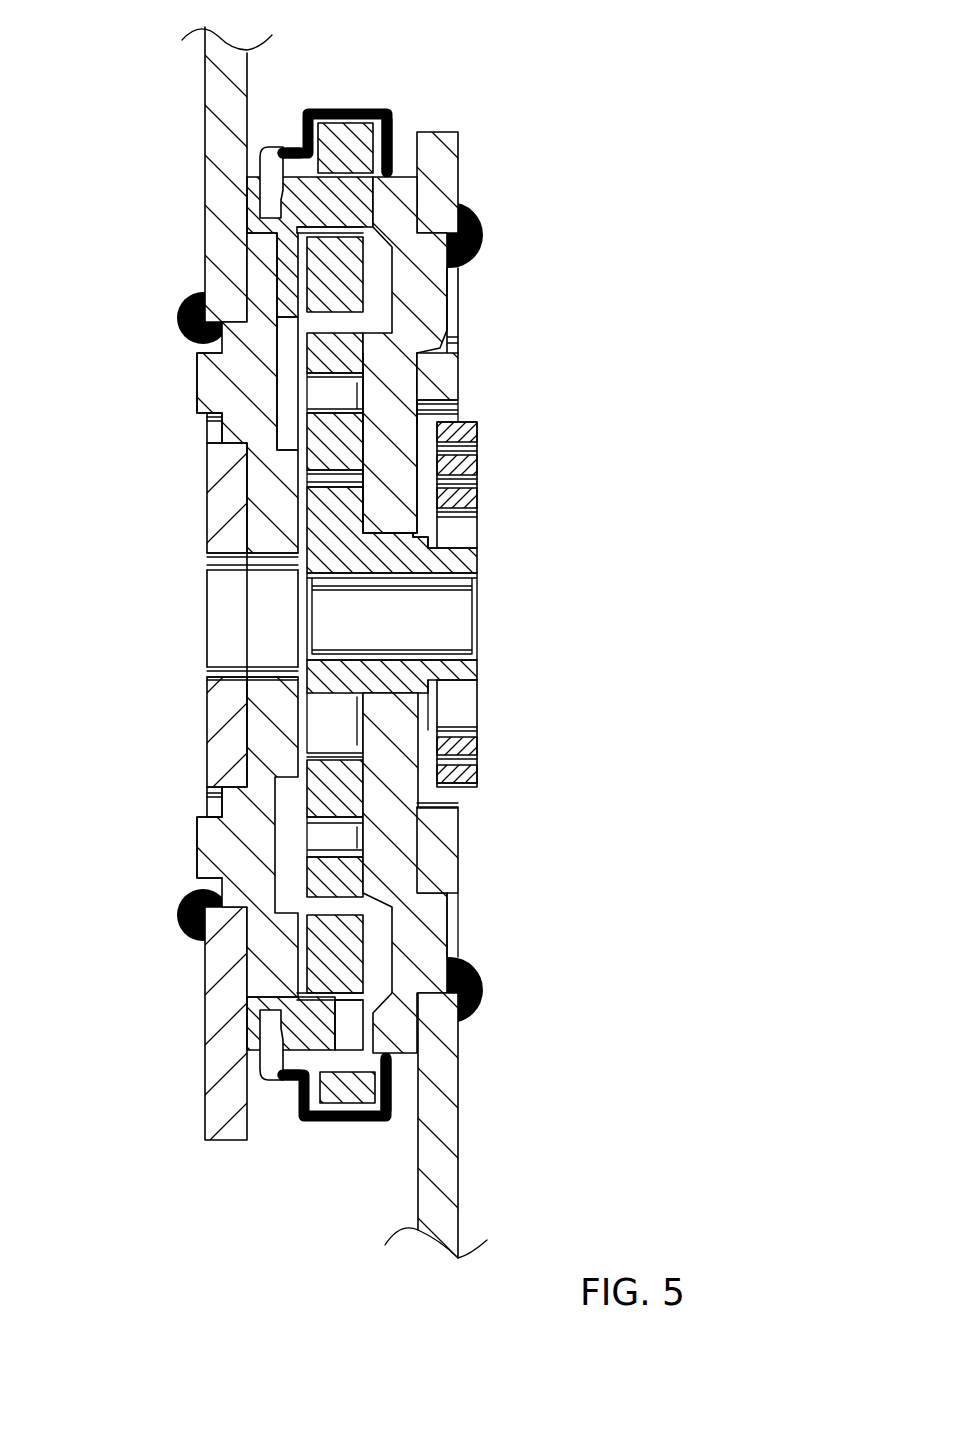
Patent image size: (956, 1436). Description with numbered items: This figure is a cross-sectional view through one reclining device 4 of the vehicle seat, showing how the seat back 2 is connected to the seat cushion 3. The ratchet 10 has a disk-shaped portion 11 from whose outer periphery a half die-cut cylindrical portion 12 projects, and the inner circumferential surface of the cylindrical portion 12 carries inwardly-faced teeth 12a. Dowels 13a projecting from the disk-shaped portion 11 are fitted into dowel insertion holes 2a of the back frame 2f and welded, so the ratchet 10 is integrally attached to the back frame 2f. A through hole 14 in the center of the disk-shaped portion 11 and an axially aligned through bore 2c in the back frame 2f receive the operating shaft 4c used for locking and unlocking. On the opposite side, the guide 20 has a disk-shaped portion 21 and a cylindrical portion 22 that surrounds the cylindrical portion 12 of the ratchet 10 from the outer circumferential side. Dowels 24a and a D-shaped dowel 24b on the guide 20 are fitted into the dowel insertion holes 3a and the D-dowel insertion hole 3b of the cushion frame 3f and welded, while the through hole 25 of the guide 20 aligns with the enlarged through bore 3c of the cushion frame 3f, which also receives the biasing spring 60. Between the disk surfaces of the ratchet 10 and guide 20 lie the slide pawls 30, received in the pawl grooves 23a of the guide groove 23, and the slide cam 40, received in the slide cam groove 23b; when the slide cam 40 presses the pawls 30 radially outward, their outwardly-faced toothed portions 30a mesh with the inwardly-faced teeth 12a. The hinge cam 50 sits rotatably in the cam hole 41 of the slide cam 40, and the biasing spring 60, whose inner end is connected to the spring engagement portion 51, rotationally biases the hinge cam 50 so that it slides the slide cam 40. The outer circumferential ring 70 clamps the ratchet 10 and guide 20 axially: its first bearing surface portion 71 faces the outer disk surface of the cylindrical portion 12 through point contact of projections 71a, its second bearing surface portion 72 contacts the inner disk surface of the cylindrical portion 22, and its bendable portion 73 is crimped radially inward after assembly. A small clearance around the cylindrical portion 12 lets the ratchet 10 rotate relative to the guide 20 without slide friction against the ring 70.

The seat back 2 is at (226, 1023).
The back frame 2f is at (227, 105).
The dowel insertion holes 2a is at (216, 427).
The through bore 2c is at (232, 637).
The seat cushion 3 is at (472, 1125).
The dowel insertion holes 3a is at (450, 330).
The D-dowel insertion hole 3b is at (450, 904).
The through bore 3c is at (435, 412).
The cushion frame 3f is at (442, 1070).
The reclining device 4 is at (384, 610).
The operating shaft 4c is at (496, 530).
The ratchet 10 is at (260, 277).
The disk-shaped portion 11 is at (270, 485).
The cylindrical portion 12 is at (298, 203).
The inwardly-faced teeth 12a is at (323, 230).
The dowels 13a is at (210, 378).
The through hole 14 is at (274, 595).
The guide 20 is at (425, 178).
The disk-shaped portion 21 is at (397, 465).
The cylindrical portion 22 is at (348, 150).
The guide groove 23 is at (448, 600).
The pawl grooves 23a is at (360, 366).
The slide cam groove 23b is at (360, 718).
The dowels 24a is at (427, 289).
The D-shaped dowel 24b is at (427, 940).
The through hole 25 is at (394, 605).
The slide pawls 30 is at (410, 202).
The outwardly-faced toothed portions 30a is at (323, 998).
The slide cam 40 is at (354, 784).
The cam hole 41 is at (332, 732).
The hinge cam 50 is at (415, 552).
The spring engagement portion 51 is at (455, 560).
The biasing spring 60 is at (462, 499).
The outer circumferential ring 70 is at (280, 146).
The first bearing surface portion 71 is at (181, 613).
The projections 71a is at (272, 197).
The second bearing surface portion 72 is at (310, 137).
The bendable portion 73 is at (382, 140).